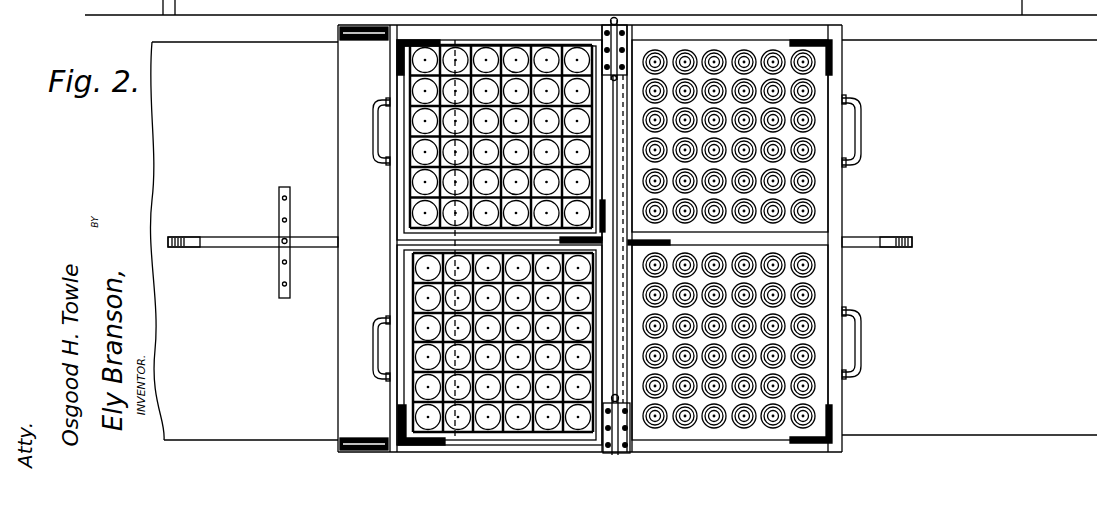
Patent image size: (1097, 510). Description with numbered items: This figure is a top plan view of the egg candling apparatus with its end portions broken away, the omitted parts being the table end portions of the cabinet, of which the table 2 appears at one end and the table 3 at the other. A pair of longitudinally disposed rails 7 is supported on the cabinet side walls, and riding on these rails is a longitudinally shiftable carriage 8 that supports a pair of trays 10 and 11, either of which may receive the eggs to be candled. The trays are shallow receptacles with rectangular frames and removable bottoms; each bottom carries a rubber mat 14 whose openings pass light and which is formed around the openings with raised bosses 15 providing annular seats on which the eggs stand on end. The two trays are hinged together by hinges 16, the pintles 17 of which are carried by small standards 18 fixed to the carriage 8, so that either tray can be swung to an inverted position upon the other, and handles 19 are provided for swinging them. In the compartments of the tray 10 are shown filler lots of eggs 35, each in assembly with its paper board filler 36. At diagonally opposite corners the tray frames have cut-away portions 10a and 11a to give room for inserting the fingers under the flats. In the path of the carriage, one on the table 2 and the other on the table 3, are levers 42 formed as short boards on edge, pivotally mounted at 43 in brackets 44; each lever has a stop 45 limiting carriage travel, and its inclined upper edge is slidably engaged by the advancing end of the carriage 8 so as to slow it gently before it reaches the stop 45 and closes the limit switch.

The table 2 is at (191, 84).
The table 3 is at (1010, 77).
The rails 7 is at (360, 40).
The carriage 8 is at (508, 28).
The tray 10 is at (397, 73).
The cut-away portion 10a is at (413, 443).
The tray 11 is at (832, 60).
The cut-away portion 11a is at (832, 45).
The rubber mat 14 is at (820, 105).
The raised bosses 15 is at (815, 207).
The hinges 16 is at (606, 428).
The pintles 17 is at (622, 455).
The standards 18 is at (616, 452).
The handles 19 is at (380, 112).
The filler lots of eggs 35 is at (415, 212).
The paper board filler 36 is at (410, 222).
The levers 42 is at (246, 247).
The pivot 43 is at (283, 234).
The brackets 44 is at (291, 226).
The stops 45 is at (202, 237).